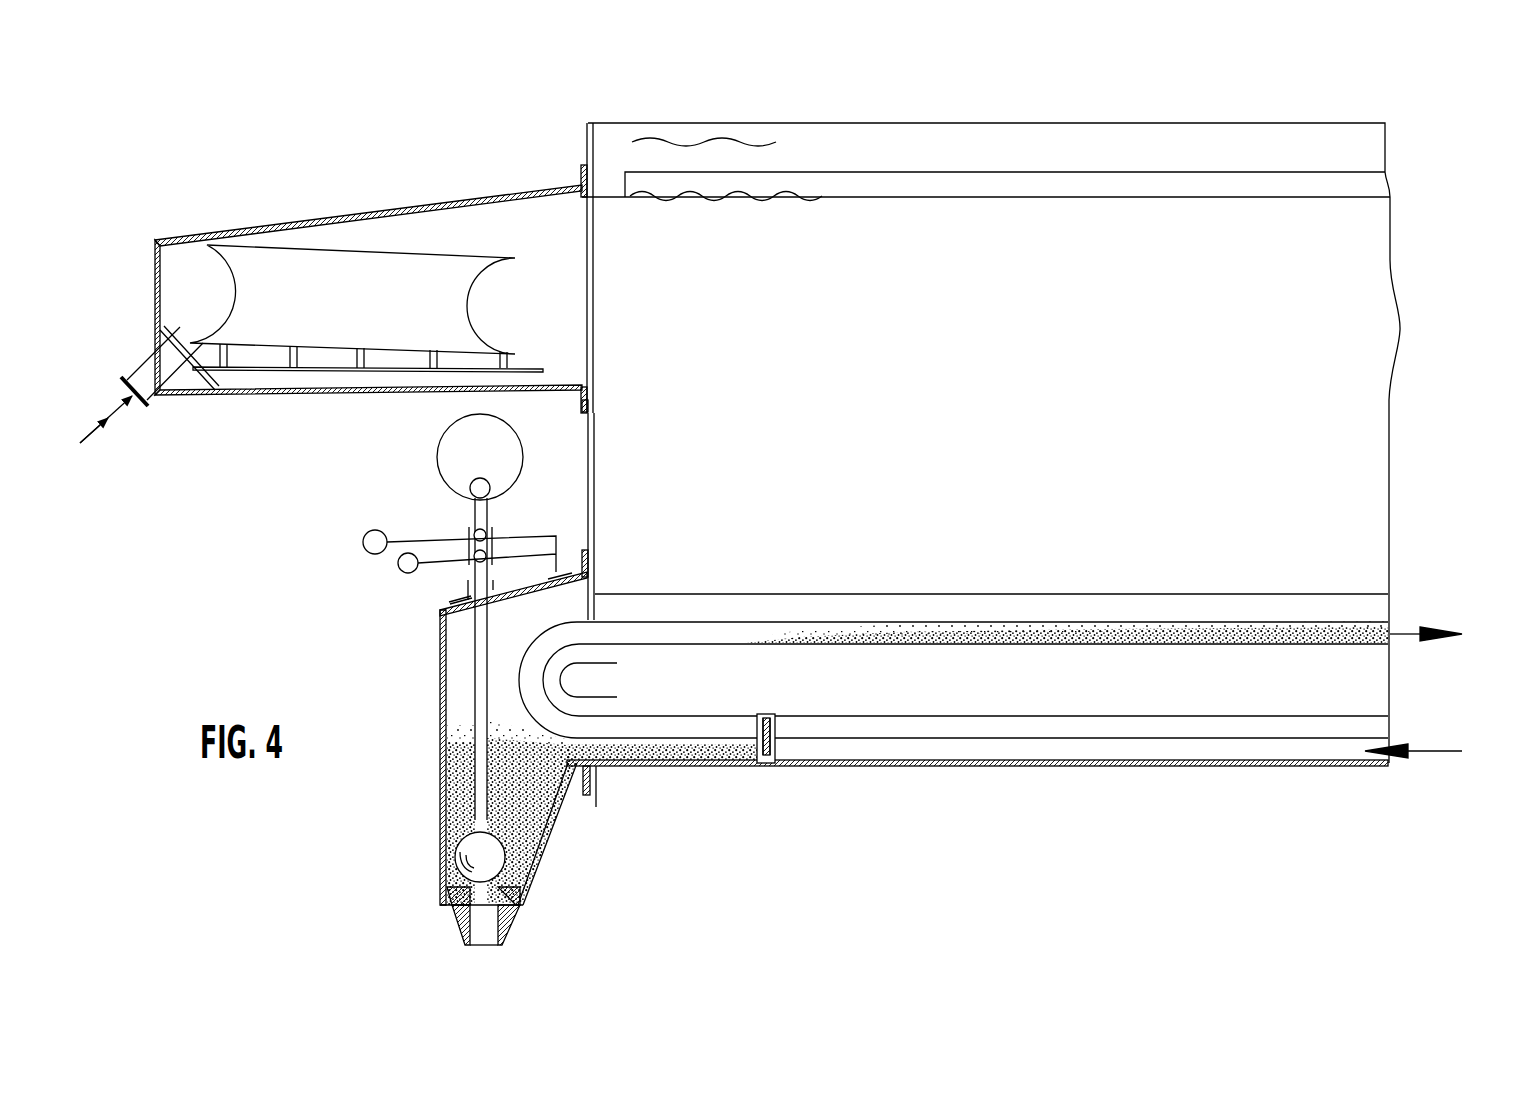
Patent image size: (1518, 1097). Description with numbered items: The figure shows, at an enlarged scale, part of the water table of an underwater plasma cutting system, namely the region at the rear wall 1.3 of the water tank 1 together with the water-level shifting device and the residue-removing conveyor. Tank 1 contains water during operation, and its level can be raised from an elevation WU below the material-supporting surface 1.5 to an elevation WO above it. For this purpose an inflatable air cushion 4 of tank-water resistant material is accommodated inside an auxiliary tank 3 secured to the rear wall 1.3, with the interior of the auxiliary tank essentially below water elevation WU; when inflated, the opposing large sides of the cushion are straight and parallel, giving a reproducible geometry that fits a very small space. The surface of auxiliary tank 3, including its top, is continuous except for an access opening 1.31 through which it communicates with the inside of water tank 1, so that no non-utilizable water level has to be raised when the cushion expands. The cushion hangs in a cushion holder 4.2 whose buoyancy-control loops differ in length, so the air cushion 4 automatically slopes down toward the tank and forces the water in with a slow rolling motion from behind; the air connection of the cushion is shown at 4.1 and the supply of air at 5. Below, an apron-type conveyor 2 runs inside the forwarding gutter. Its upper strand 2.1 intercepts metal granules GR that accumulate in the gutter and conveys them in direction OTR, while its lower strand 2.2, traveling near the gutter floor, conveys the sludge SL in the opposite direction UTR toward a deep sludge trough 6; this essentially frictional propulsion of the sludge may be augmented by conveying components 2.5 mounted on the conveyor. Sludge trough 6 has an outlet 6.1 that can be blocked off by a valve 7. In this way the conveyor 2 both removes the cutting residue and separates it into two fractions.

The water tank 1 is at (1050, 123).
The rear wall 1.3 is at (597, 460).
The access opening 1.31 is at (597, 320).
The material-supporting surface 1.5 is at (968, 190).
The apron-type conveyor 2 is at (1373, 672).
The upper strand 2.1 is at (702, 630).
The lower strand 2.2 is at (1065, 727).
The conveying components 2.5 is at (773, 750).
The auxiliary tank 3 is at (418, 222).
The inflatable air cushion 4 is at (233, 256).
The supply pipe 4.1 is at (143, 372).
The cushion holder 4.2 is at (360, 352).
The supply direction 5 is at (100, 425).
The sludge trough 6 is at (443, 662).
The outlet 6.1 is at (507, 913).
The valve 7 is at (383, 567).
The upper water elevation WO is at (683, 142).
The lower water elevation WU is at (690, 193).
The granules GR is at (1020, 612).
The sludge SL is at (655, 775).
The upper strand conveying direction OTR is at (1405, 632).
The lower strand conveying direction UTR is at (1438, 753).